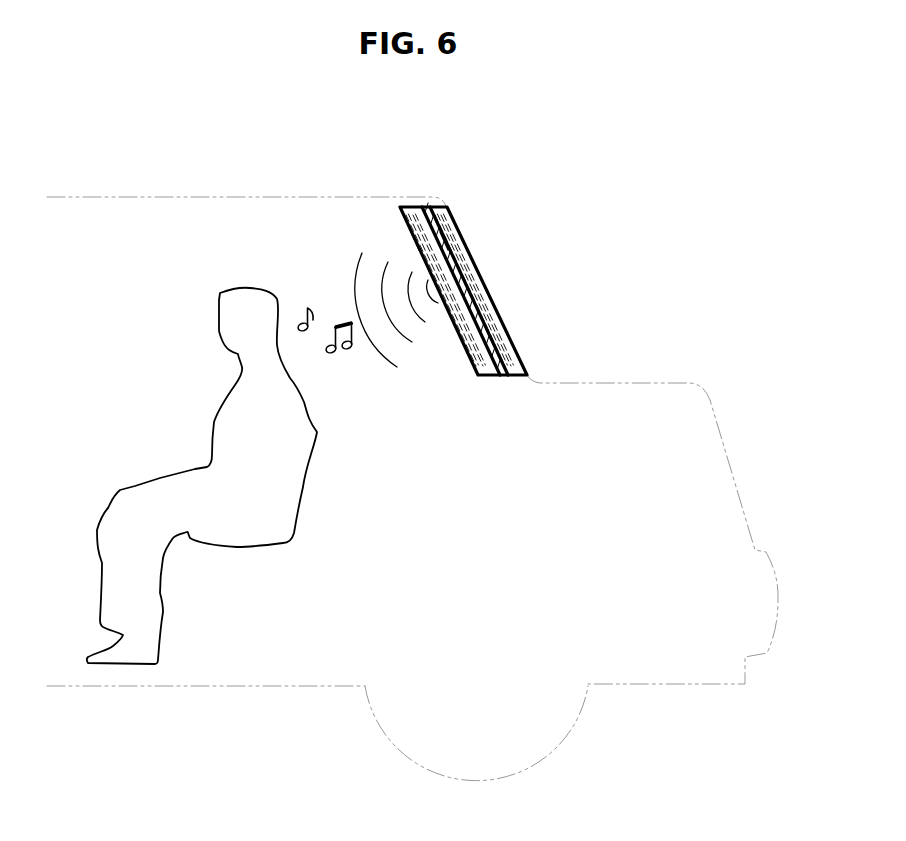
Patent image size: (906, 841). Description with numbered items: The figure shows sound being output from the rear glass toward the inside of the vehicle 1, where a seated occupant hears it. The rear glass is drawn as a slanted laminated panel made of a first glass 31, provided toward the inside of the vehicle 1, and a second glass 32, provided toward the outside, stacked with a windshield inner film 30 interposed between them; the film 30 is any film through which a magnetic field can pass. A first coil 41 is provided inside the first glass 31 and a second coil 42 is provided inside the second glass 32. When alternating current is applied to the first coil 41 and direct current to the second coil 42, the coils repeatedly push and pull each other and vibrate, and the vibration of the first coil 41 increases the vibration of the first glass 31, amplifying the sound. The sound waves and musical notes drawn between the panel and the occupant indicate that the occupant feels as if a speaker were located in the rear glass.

The vehicle 1 is at (241, 197).
The windshield inner film 30 is at (422, 206).
The first glass 31 is at (405, 225).
The second glass 32 is at (455, 224).
The first coil 41 is at (428, 248).
The second coil 42 is at (453, 245).